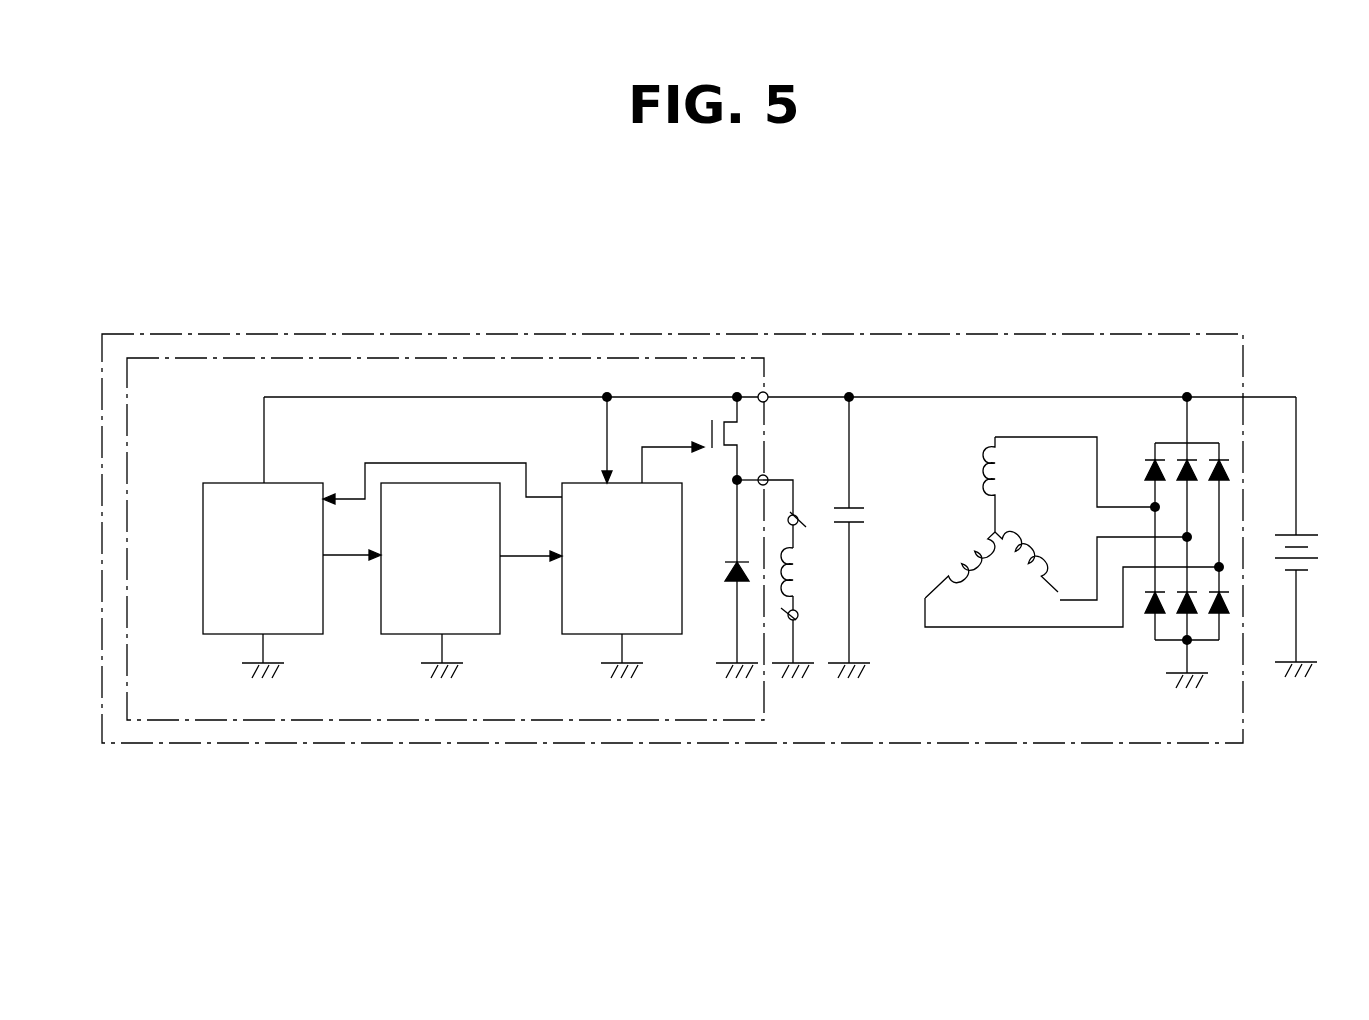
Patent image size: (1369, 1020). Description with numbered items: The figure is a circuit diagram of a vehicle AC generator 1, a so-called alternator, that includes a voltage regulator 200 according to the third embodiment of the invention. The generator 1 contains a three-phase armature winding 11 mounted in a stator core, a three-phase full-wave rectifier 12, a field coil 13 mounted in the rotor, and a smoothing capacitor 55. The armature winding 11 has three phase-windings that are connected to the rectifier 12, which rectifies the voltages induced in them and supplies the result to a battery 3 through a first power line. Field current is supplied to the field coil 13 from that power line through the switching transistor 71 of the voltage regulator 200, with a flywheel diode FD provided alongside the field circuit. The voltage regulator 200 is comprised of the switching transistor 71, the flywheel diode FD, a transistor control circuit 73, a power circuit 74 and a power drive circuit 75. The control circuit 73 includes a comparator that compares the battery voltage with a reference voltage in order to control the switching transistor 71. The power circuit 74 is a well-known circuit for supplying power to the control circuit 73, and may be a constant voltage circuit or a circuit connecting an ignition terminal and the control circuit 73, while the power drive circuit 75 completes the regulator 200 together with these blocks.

The vehicle AC generator 1 is at (940, 334).
The battery 3 is at (1300, 532).
The three-phase armature winding 11 is at (993, 627).
The three-phase full-wave rectifier 12 is at (1153, 685).
The field coil 13 is at (806, 622).
The smoothing capacitor 55 is at (850, 595).
The switching transistor 71 is at (725, 412).
The transistor control circuit 73 is at (590, 634).
The power circuit 74 is at (408, 634).
The power drive circuit 75 is at (230, 634).
The voltage regulator 200 is at (452, 357).
The flywheel diode FD is at (705, 583).